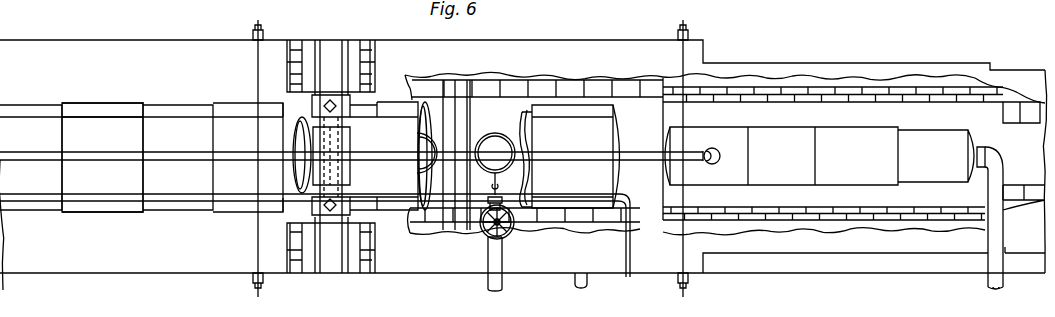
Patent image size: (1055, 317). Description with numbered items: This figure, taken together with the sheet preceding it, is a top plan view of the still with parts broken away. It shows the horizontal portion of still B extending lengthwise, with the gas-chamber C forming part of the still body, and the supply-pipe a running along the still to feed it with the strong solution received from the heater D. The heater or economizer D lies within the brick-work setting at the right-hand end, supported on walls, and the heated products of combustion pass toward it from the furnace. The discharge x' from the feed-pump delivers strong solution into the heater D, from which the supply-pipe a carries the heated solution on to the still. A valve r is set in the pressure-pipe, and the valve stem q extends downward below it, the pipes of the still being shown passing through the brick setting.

The horizontal portion of still B is at (523, 158).
The gas-chamber C is at (102, 157).
The supply-pipe a is at (360, 165).
The heater or economizer D is at (825, 156).
The valve in pressure-pipe r is at (511, 232).
The valve stem q is at (504, 270).
The discharge to heater x' is at (1006, 224).